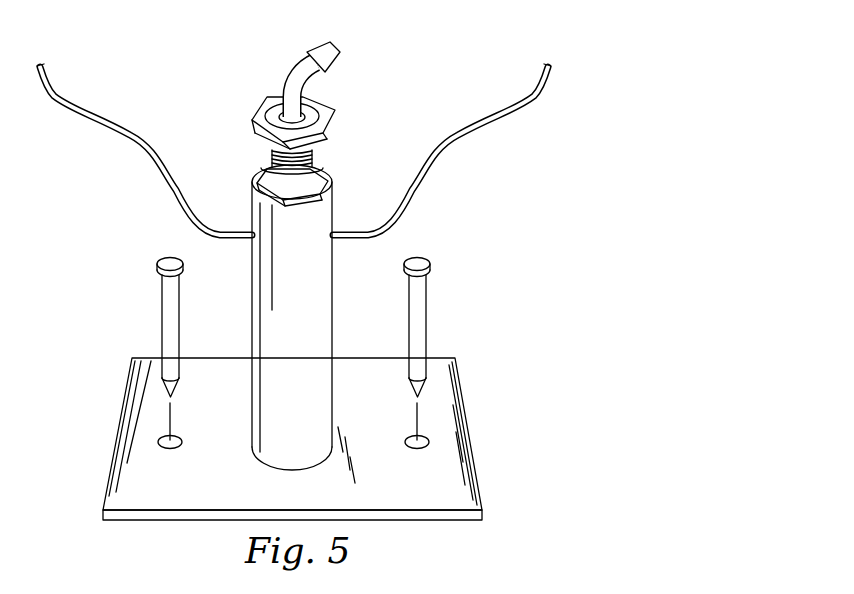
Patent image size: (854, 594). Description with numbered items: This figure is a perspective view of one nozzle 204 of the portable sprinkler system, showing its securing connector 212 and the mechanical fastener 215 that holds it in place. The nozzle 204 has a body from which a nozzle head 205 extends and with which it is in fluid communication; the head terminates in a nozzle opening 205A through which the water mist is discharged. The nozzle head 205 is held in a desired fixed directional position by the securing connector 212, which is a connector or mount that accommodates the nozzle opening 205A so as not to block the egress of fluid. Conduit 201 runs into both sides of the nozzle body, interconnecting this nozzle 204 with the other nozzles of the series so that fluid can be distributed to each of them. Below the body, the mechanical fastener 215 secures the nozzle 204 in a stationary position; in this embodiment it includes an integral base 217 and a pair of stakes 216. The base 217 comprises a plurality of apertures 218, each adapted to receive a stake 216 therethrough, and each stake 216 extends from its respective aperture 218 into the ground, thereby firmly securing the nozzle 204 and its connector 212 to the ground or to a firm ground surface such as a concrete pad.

The conduit 201 is at (140, 148).
The nozzle 204 is at (333, 287).
The nozzle head 205 is at (318, 43).
The nozzle opening 205A is at (338, 44).
The securing connector 212 is at (333, 137).
The mechanical fastener 215 is at (479, 354).
The stake 216 is at (162, 313).
The integral base 217 is at (455, 475).
The aperture 218 is at (155, 438).